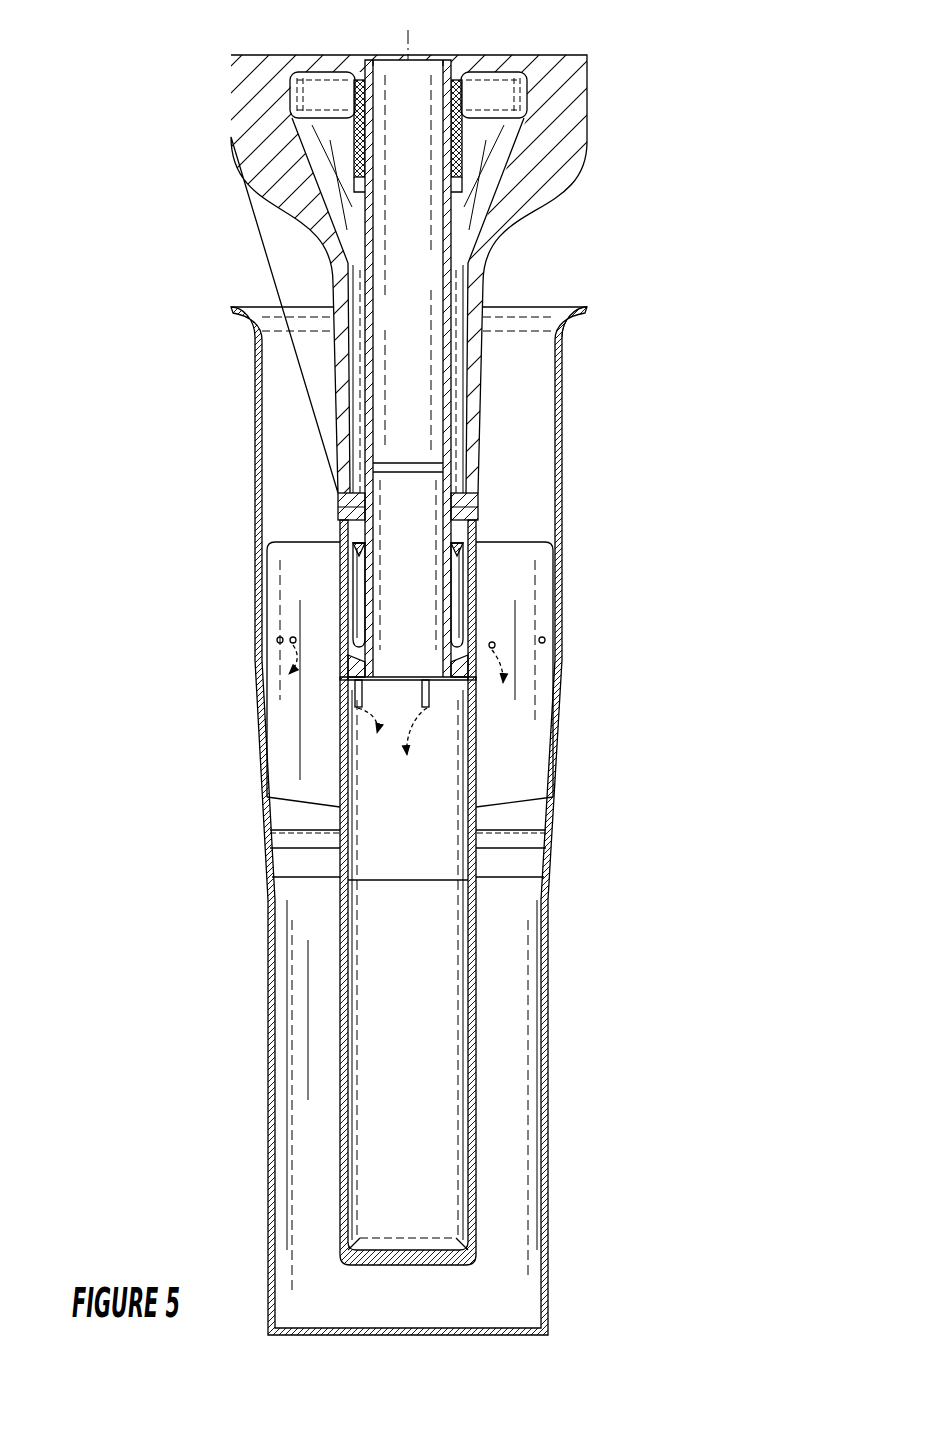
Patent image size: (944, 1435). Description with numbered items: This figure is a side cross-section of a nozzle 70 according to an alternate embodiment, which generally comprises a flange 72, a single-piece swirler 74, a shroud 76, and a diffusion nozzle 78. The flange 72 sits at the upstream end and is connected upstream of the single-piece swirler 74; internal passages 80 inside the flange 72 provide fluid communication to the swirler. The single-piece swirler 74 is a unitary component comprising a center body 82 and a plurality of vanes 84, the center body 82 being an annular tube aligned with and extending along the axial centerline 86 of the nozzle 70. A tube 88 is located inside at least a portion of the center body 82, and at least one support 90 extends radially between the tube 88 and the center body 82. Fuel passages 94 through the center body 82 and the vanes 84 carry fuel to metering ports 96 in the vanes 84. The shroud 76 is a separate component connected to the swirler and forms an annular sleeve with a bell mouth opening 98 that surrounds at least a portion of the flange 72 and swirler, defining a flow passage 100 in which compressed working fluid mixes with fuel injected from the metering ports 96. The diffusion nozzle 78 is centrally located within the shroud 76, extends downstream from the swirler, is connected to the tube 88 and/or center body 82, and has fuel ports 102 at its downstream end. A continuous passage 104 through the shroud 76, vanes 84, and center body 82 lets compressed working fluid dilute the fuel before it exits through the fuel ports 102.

The nozzle 70 is at (138, 321).
The flange 72 is at (587, 120).
The single-piece swirler 74 is at (335, 670).
The shroud 76 is at (562, 472).
The diffusion nozzle 78 is at (340, 1153).
The internal passages 80 is at (492, 157).
The center body 82 is at (480, 520).
The vanes 84 is at (530, 542).
The axial centerline 86 is at (403, 48).
The tube 88 is at (365, 487).
The support 90 is at (363, 523).
The fuel passages 94 is at (358, 591).
The metering ports 96 is at (545, 640).
The bell mouth opening 98 is at (587, 307).
The flow passage 100 is at (516, 403).
The fuel ports 102 is at (453, 1265).
The continuous passage 104 is at (360, 703).